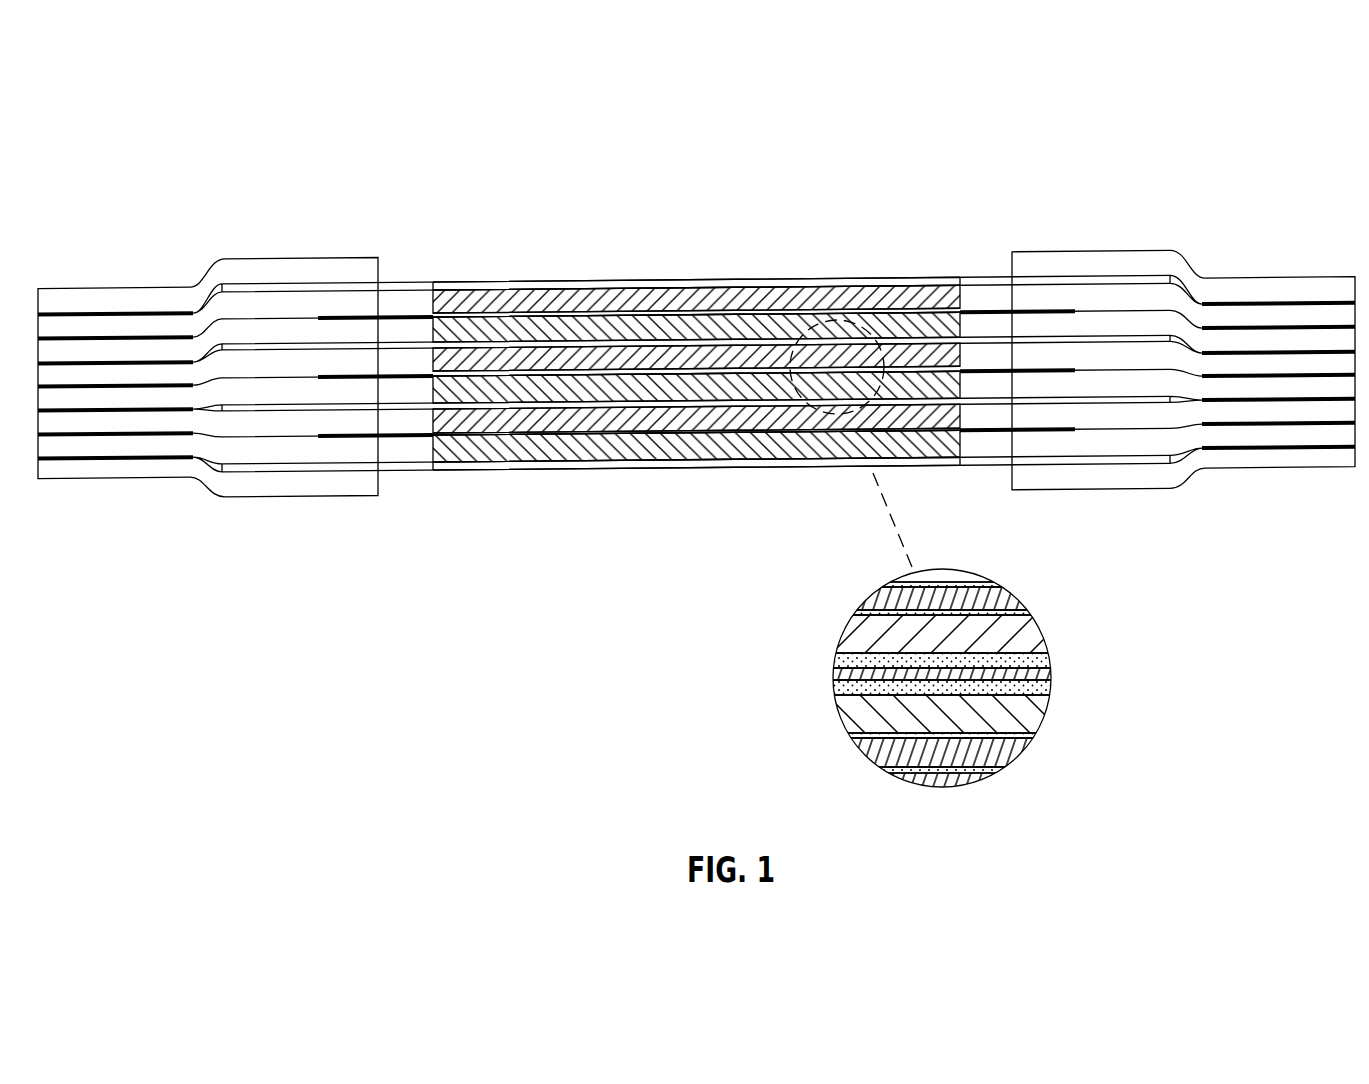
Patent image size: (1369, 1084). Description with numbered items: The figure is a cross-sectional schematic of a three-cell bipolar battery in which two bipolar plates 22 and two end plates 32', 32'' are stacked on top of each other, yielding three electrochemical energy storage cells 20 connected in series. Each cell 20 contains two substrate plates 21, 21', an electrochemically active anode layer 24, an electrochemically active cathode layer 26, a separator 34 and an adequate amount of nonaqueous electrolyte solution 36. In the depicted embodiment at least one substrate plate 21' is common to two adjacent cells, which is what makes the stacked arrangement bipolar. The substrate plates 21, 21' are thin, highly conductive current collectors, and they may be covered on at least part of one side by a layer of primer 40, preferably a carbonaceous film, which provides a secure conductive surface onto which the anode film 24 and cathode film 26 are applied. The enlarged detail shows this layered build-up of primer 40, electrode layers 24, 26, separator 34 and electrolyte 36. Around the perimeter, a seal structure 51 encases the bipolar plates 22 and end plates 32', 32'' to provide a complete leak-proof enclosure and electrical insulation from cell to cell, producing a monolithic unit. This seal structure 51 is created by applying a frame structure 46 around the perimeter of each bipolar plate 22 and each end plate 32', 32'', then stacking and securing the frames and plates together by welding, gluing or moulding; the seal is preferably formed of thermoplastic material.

The electrochemical energy storage cell 20 is at (642, 450).
The substrate plate 21 is at (696, 299).
The substrate plate 21' is at (690, 280).
The bipolar plate 22 is at (630, 403).
The electrochemically active anode layer 24 is at (660, 295).
The electrochemically active cathode layer 26 is at (770, 322).
The end plate 32' is at (696, 208).
The end plate 32'' is at (696, 535).
The separator 34 is at (940, 307).
The electrolyte solution 36 is at (840, 660).
The primer 40 is at (905, 568).
The frame structure 46 is at (147, 470).
The seal structure 51 is at (1262, 292).